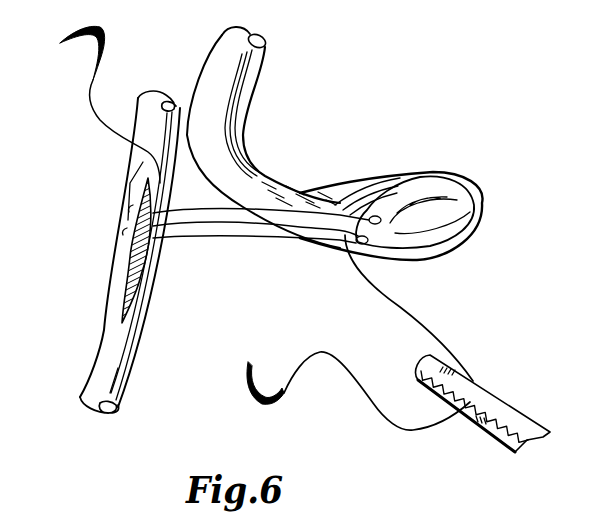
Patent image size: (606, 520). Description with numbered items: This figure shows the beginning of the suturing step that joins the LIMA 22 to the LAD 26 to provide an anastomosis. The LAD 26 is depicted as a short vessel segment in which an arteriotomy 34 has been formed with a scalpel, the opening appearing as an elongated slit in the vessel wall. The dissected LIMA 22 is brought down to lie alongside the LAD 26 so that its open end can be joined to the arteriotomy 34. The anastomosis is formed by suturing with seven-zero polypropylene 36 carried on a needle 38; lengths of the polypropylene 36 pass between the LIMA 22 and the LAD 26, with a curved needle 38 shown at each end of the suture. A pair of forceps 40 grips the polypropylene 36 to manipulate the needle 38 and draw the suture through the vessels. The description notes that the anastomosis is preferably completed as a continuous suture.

The LIMA 22 is at (262, 160).
The LAD 26 is at (100, 352).
The arteriotomy 34 is at (132, 260).
The 7/0 polypropylene 36 is at (420, 316).
The needle 38 is at (100, 28).
The forceps 40 is at (498, 393).